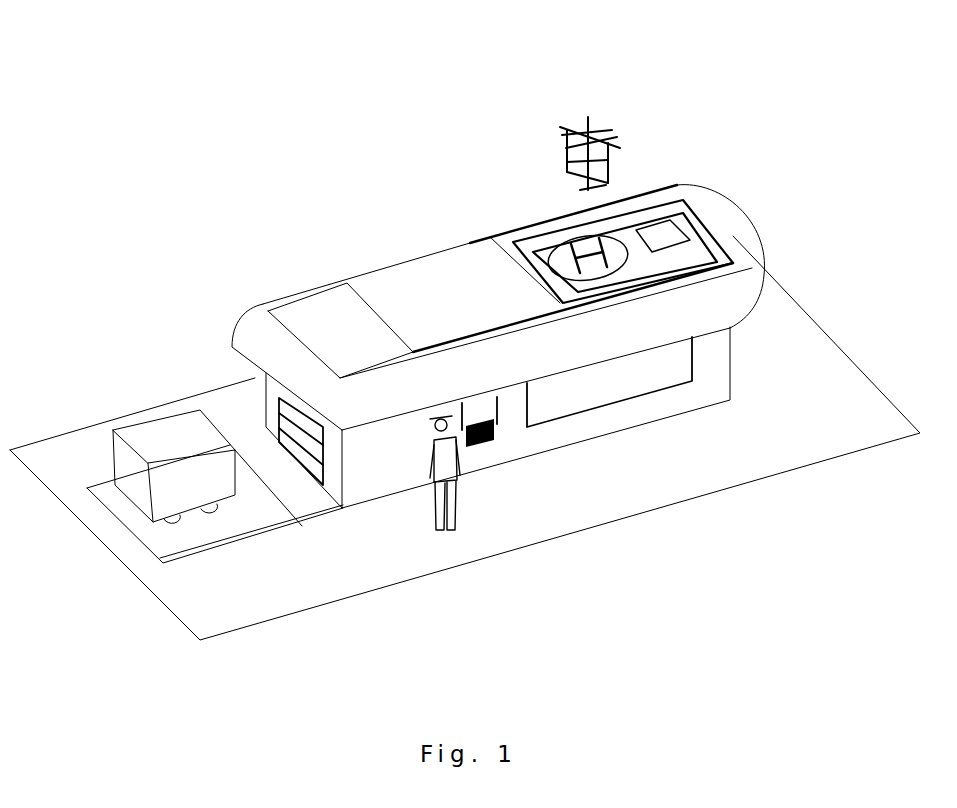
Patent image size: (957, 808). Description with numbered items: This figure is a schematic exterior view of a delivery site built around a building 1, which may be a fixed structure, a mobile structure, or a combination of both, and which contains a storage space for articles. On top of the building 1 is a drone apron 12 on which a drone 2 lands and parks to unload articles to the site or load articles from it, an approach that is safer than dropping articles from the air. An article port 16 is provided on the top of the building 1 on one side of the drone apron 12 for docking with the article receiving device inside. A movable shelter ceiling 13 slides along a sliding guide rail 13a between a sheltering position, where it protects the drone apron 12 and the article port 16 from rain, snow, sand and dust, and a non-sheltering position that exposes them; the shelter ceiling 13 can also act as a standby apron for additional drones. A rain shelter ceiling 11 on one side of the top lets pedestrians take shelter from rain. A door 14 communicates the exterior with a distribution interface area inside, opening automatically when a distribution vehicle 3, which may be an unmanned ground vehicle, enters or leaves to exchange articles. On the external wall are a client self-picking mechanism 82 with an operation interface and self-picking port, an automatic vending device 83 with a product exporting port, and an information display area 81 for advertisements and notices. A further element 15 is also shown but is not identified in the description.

The building 1 is at (713, 362).
The drone 2 is at (571, 147).
The distribution vehicle 3 is at (160, 425).
The rain shelter ceiling 11 is at (252, 327).
The drone apron 12 is at (607, 250).
The shelter ceiling 13 is at (453, 270).
The sliding guide rail 13a is at (507, 234).
The door 14 is at (287, 418).
The platform 15 is at (257, 507).
The article port 16 is at (670, 237).
The information display area 81 is at (627, 378).
The client self-picking mechanism 82 is at (585, 489).
The automatic vending device 83 is at (500, 429).